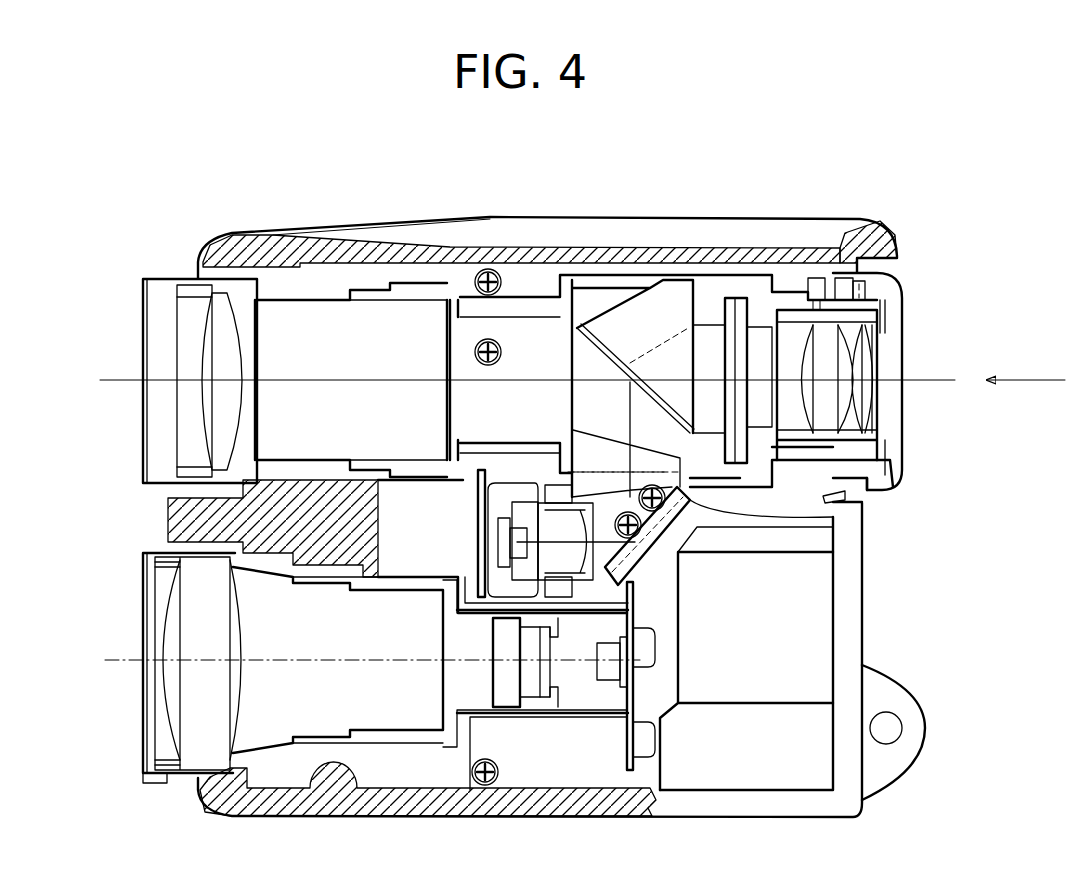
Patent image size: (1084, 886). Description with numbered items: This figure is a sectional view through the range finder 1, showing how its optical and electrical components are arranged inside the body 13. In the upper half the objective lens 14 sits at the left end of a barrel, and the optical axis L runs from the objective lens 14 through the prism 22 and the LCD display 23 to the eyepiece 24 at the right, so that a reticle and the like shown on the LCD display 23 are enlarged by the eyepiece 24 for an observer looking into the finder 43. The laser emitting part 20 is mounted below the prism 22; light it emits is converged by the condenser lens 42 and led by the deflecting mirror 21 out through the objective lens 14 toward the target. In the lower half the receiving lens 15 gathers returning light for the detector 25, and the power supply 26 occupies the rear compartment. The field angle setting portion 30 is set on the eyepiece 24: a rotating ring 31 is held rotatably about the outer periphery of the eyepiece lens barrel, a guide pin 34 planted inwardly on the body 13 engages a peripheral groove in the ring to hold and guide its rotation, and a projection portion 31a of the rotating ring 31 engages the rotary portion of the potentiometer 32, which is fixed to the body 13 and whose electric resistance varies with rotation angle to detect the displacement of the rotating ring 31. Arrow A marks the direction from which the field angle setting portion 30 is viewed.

The range finder 1 is at (1012, 228).
The body 13 is at (600, 293).
The objective lens 14 is at (223, 338).
The receiving lens 15 is at (223, 587).
The laser emitting part 20 is at (522, 493).
The deflecting mirror 21 is at (835, 516).
The prism 22 is at (655, 313).
The LCD display 23 is at (738, 307).
The eyepiece 24 is at (865, 363).
The detector 25 is at (607, 660).
The power supply 26 is at (815, 626).
The field angle setting portion 30 is at (901, 256).
The rotating ring 31 is at (880, 303).
The projection portion 31a is at (860, 283).
The potentiometer 32 is at (838, 280).
The guide pin 34 is at (812, 290).
The condenser lens 42 is at (583, 555).
The finder 43 is at (892, 413).
The optical axis L is at (320, 383).
The arrow A is at (1019, 383).